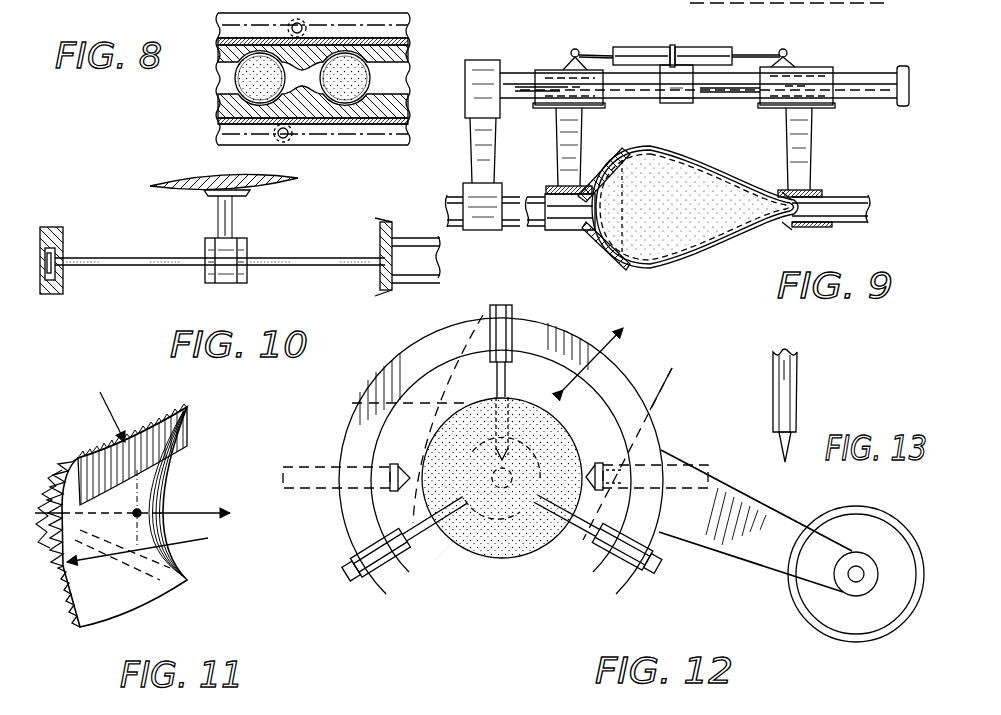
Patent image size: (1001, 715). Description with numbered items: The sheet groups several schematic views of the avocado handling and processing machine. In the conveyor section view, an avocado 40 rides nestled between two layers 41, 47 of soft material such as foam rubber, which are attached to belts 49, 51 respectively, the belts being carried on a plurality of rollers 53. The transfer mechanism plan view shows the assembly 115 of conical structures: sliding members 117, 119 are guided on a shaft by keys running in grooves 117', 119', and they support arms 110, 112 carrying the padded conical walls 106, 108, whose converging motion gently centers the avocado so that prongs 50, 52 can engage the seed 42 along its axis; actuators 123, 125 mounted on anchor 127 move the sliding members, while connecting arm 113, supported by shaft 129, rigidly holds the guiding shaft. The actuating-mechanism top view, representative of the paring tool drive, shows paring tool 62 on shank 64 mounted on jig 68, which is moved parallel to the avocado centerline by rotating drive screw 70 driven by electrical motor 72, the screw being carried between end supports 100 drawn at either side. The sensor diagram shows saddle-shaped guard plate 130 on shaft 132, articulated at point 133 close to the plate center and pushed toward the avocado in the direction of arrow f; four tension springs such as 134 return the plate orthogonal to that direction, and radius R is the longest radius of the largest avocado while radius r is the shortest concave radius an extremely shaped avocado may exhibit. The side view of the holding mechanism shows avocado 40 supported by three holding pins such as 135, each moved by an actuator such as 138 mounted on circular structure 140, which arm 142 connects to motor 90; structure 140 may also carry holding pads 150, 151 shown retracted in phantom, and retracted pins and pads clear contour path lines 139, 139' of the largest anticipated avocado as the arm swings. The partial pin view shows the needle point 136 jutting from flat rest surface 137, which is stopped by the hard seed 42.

In FIG. 8, the avocado 40 is at (345, 78).
In FIG. 9, the avocado 40 is at (695, 211).
In FIG. 10, the avocado 40 is at (208, 196).
In FIG. 12, the avocado 40 is at (502, 501).
In FIG. 8, the layer of soft material 41 is at (232, 108).
In FIG. 12, the seed 42 is at (494, 448).
In FIG. 8, the layer of soft material 47 is at (228, 63).
In FIG. 8, the belt 49 is at (245, 124).
In FIG. 9, the prong 50 is at (840, 197).
In FIG. 8, the belt 51 is at (218, 48).
In FIG. 9, the prong 52 is at (548, 196).
In FIG. 12, the prong 52 is at (480, 505).
In FIG. 8, the roller 53 is at (288, 136).
In FIG. 10, the paring tool 62 is at (215, 178).
In FIG. 10, the shank 64 is at (232, 211).
In FIG. 10, the jig 68 is at (249, 250).
In FIG. 10, the drive screw 70 is at (104, 268).
In FIG. 10, the electrical motor 72 is at (406, 284).
In FIG. 12, the motor 90 is at (806, 624).
In FIG. 10, the side wall 100 is at (52, 227).
In FIG. 9, the conical wall 106 is at (600, 240).
In FIG. 9, the conical wall 108 is at (806, 227).
In FIG. 9, the support arm 110 is at (812, 148).
In FIG. 9, the support arm 112 is at (578, 148).
In FIG. 9, the connecting arm 113 is at (470, 160).
In FIG. 9, the assembly of the conical structures 115 is at (513, 73).
In FIG. 9, the sliding member 117 is at (569, 62).
In FIG. 9, the groove 117' is at (531, 112).
In FIG. 9, the sliding member 119 is at (805, 68).
In FIG. 9, the groove 119' is at (730, 112).
In FIG. 9, the actuator 123 is at (640, 47).
In FIG. 9, the actuator 125 is at (720, 47).
In FIG. 9, the anchor 127 is at (673, 103).
In FIG. 9, the shaft 129 is at (463, 192).
In FIG. 11, the guard plate 130 is at (128, 598).
In FIG. 11, the shaft 132 is at (132, 457).
In FIG. 11, the articulation point 133 is at (141, 511).
In FIG. 11, the tension spring 134 is at (75, 468).
In FIG. 12, the holding pin 135 is at (518, 408).
In FIG. 13, the holding pin 135 is at (800, 370).
In FIG. 13, the needle point 136 is at (796, 450).
In FIG. 13, the flat rest surface 137 is at (776, 436).
In FIG. 12, the actuator 138 is at (512, 322).
In FIG. 12, the contour path line 139 is at (388, 419).
In FIG. 12, the contour path line 139' is at (639, 434).
In FIG. 12, the circular structure 140 is at (342, 514).
In FIG. 12, the arm 142 is at (745, 562).
In FIG. 12, the holding pad 150 is at (320, 465).
In FIG. 12, the holding pad 151 is at (690, 492).
In FIG. 11, the radius r is at (112, 411).
In FIG. 11, the arrow f is at (132, 494).
In FIG. 11, the radius R is at (147, 555).